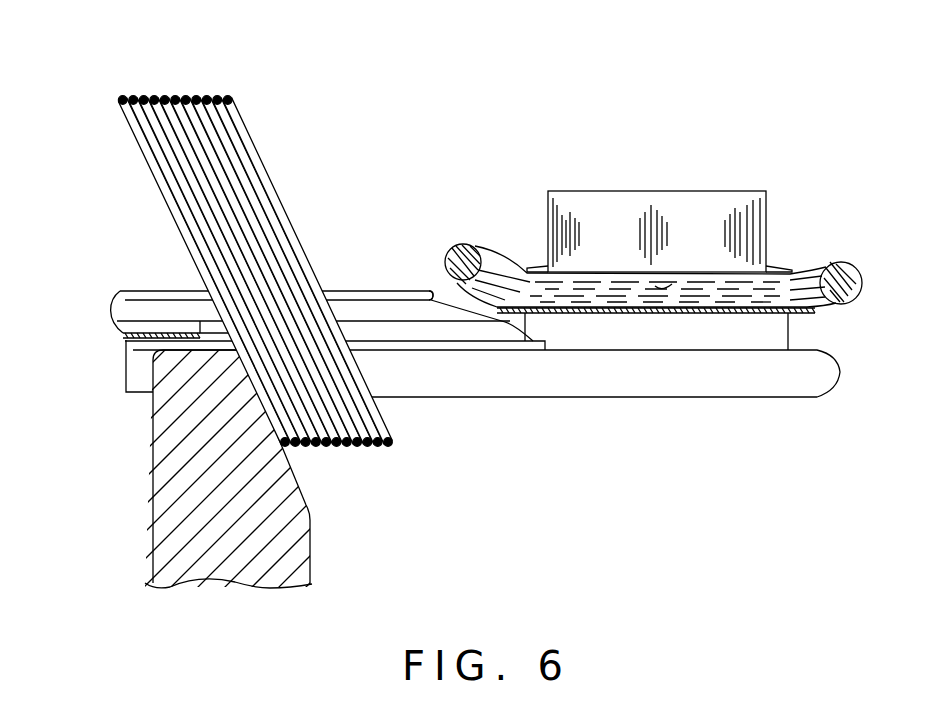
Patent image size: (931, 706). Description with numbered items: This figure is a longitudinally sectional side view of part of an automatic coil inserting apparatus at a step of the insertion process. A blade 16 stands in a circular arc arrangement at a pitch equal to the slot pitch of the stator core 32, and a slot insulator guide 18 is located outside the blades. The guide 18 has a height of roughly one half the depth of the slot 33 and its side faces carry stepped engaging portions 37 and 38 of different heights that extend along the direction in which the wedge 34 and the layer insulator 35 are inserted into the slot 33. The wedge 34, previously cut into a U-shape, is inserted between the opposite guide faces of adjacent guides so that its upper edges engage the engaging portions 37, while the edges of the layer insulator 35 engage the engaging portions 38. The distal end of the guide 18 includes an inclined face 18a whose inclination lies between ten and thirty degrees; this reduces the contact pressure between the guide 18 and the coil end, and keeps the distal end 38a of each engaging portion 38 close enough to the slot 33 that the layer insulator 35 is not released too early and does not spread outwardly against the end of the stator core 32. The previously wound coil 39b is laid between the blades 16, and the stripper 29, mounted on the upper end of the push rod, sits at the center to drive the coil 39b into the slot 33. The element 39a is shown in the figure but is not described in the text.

The blade 16 is at (747, 400).
The slot insulator guide 18 is at (358, 289).
The inclined face 18a is at (448, 298).
The stripper 29 is at (312, 560).
The stator core 32 is at (625, 190).
The slot 33 is at (658, 285).
The wedge 34 is at (127, 353).
The layer insulator 35 is at (667, 313).
The engaging portion 37 is at (474, 323).
The engaging portion 38 is at (115, 308).
The distal end of engaging portion 38a is at (433, 296).
The flat cable end 39a is at (828, 268).
The coil 39b is at (190, 98).